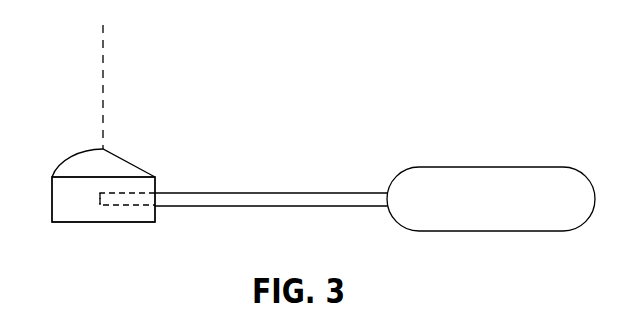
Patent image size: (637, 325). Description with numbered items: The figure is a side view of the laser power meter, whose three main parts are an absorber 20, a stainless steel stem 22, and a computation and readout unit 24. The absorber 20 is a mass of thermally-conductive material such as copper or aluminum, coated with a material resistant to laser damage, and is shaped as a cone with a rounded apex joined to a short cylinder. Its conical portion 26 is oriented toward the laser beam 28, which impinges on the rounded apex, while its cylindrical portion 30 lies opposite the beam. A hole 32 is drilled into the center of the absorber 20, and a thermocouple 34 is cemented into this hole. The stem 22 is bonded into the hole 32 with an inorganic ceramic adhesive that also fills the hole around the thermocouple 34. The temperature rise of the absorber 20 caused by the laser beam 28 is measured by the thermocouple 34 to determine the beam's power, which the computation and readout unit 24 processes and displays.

The absorber 20 is at (40, 200).
The stainless steel stem 22 is at (272, 191).
The computation and readout unit 24 is at (485, 166).
The conical portion 26 is at (128, 162).
The laser beam 28 is at (105, 77).
The cylindrical portion 30 is at (115, 223).
The hole 32 is at (137, 191).
The thermocouple 34 is at (98, 198).